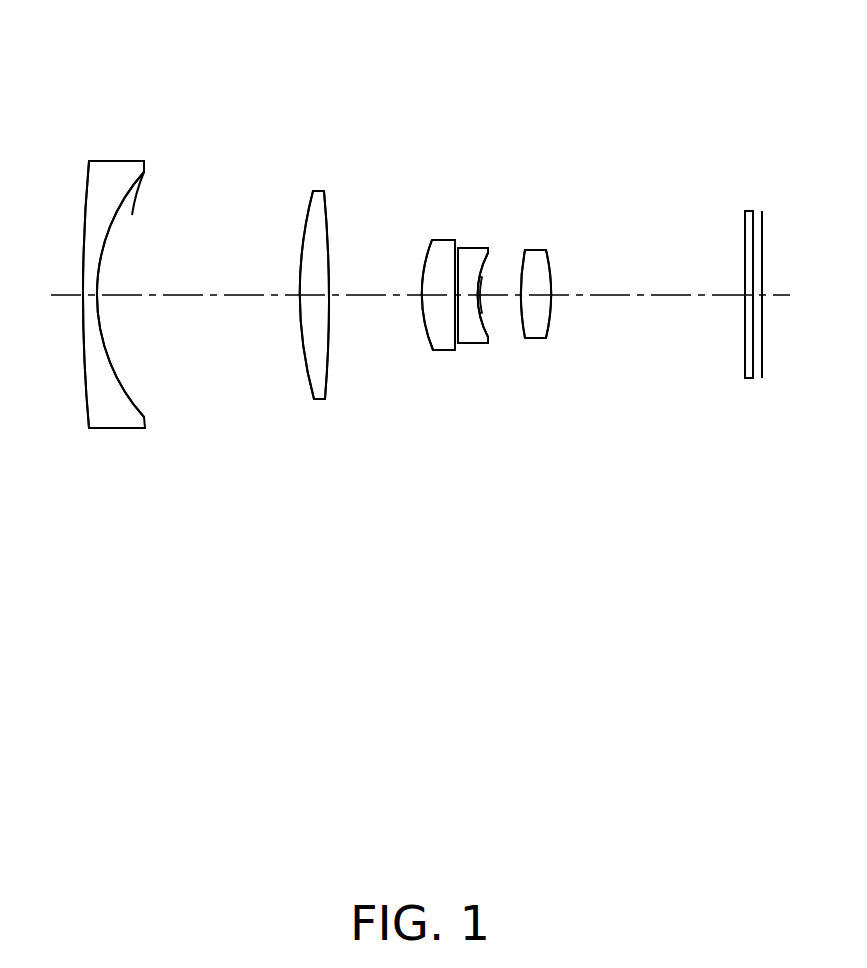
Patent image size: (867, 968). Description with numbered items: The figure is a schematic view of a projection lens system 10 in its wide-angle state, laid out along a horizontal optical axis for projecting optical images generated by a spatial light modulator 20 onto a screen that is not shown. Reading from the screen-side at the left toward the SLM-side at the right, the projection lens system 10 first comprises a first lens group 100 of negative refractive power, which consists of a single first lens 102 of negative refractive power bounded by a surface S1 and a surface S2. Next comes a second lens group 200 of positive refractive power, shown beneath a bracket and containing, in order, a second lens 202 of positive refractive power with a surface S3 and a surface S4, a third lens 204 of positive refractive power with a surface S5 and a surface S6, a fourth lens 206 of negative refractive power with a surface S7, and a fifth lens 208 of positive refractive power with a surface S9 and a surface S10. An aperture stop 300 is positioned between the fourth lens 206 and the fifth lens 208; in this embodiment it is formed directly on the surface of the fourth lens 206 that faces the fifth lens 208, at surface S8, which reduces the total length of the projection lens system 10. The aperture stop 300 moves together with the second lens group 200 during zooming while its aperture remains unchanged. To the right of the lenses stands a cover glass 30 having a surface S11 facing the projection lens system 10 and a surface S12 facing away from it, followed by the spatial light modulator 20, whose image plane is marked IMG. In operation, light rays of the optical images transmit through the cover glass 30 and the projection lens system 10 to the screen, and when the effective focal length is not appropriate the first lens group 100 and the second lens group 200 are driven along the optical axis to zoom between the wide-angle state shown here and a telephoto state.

The projection lens system 10 is at (326, 47).
The first lens group 100 is at (108, 128).
The first lens 102 is at (128, 173).
The surface S1 is at (85, 220).
The surface S2 is at (115, 220).
The second lens group 200 is at (593, 122).
The second lens 202 is at (317, 222).
The surface S3 is at (303, 248).
The surface S4 is at (328, 358).
The third lens 204 is at (447, 255).
The surface S5 is at (425, 337).
The surface S6 is at (453, 350).
The fourth lens 206 is at (470, 260).
The surface S7 is at (479, 312).
The aperture stop 300 is at (488, 327).
The surface S8 is at (482, 277).
The fifth lens 208 is at (535, 260).
The surface S9 is at (520, 315).
The surface S10 is at (553, 313).
The cover glass 30 is at (745, 238).
The surface S11 is at (745, 365).
The surface S12 is at (752, 378).
The spatial light modulator 20 is at (762, 222).
The image plane IMG is at (758, 339).